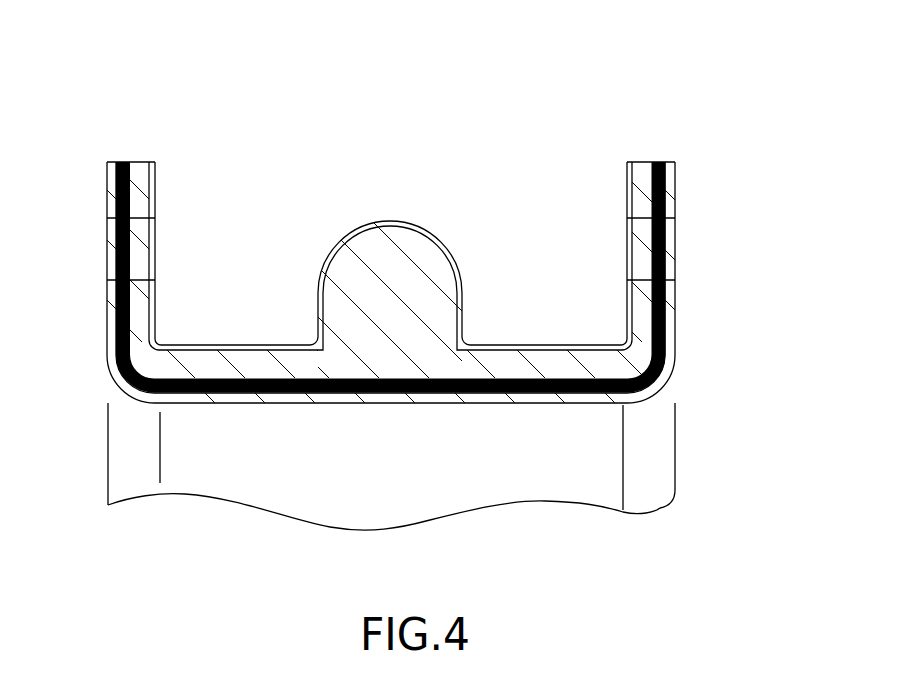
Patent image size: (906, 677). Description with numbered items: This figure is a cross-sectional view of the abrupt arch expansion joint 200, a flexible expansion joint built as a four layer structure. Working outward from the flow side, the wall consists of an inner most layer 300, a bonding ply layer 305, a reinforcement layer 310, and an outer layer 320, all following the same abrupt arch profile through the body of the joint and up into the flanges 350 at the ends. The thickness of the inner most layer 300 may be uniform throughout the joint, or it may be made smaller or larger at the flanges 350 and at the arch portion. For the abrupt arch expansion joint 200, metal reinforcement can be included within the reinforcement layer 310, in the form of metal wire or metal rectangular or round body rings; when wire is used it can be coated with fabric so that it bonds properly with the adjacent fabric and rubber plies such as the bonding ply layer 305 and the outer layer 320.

The abrupt arch expansion joint 200 is at (432, 135).
The inner most layer 300 is at (588, 403).
The bonding ply layer 305 is at (665, 240).
The reinforcement layer 310 is at (675, 333).
The outer layer 320 is at (517, 345).
The flanges 350 is at (135, 162).